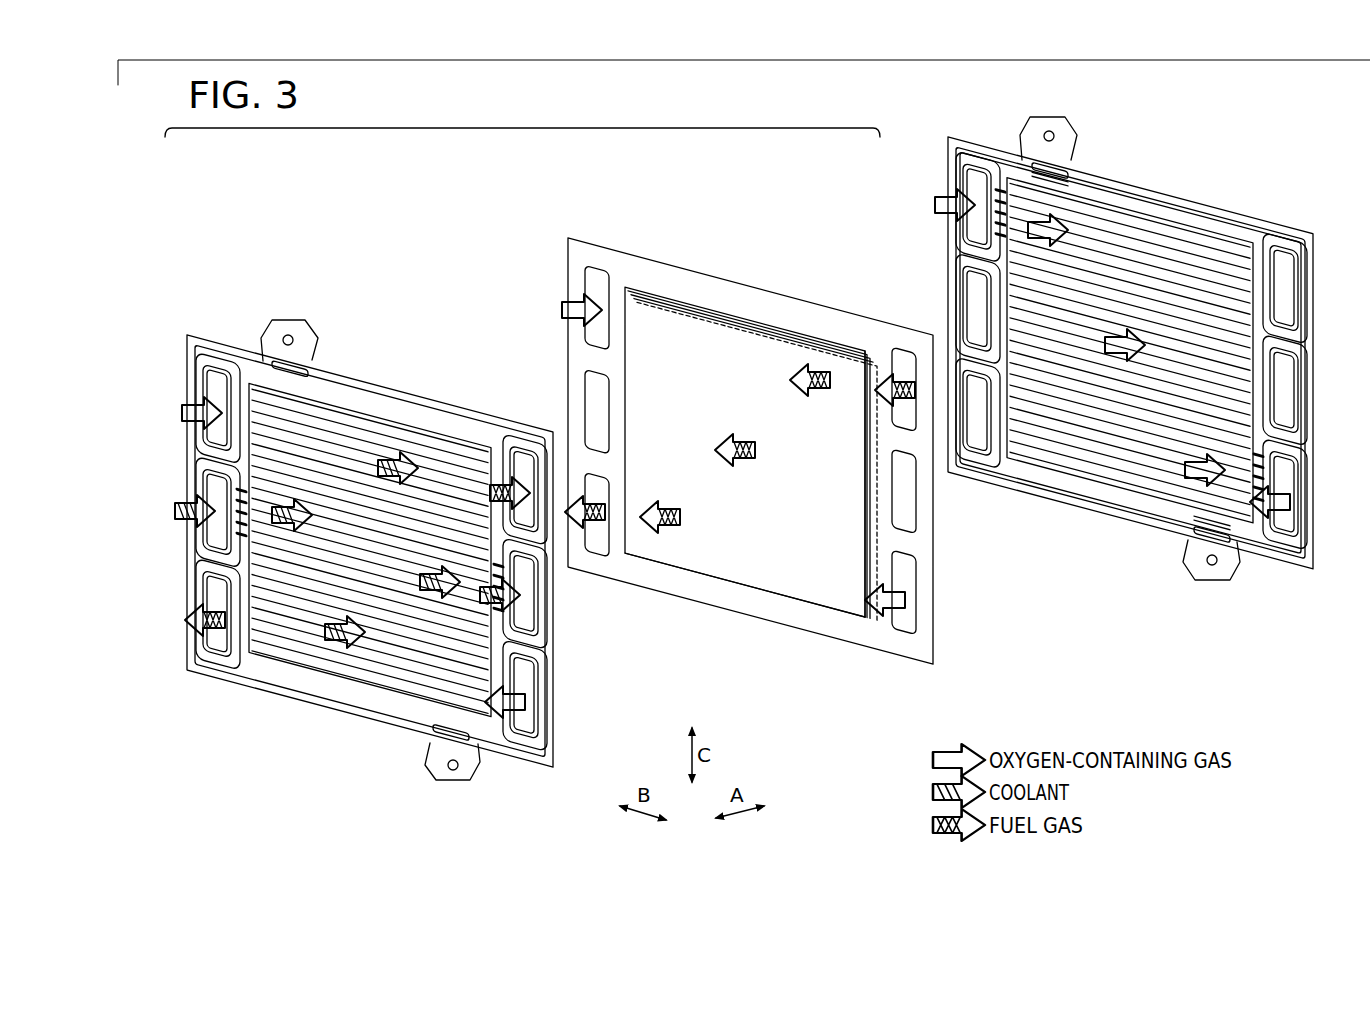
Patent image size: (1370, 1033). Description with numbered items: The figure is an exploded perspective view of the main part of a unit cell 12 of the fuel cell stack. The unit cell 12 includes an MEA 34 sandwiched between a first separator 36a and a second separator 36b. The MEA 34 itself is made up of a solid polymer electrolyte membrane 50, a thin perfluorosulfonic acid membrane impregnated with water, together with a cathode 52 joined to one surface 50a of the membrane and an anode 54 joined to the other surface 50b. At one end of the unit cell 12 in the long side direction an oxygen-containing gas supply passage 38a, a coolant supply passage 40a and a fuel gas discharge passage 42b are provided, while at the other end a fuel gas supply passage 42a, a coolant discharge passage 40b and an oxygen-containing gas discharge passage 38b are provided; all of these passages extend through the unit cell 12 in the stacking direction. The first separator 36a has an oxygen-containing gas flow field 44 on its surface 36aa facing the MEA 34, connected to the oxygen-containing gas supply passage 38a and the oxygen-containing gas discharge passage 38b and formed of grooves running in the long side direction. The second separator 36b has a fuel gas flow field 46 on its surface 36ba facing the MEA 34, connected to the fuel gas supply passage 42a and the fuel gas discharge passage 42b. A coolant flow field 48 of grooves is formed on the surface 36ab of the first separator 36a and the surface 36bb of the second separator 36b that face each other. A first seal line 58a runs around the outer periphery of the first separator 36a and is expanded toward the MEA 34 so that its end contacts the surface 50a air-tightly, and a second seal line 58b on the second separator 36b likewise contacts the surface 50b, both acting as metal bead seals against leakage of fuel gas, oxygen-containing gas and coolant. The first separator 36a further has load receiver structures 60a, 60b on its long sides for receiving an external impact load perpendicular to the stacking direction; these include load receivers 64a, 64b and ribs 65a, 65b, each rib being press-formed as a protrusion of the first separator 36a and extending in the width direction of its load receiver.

The unit cell 12 is at (522, 128).
The MEA 34 is at (568, 238).
The first separator 36a is at (942, 136).
The second separator 36b is at (187, 335).
The surface of the first separator facing the MEA 36aa is at (1292, 430).
The surface of the first separator 36ab is at (1300, 458).
The surface of the second separator facing the MEA 36ba is at (535, 652).
The surface of the second separator 36bb is at (540, 632).
The oxygen-containing gas supply passage 38a is at (215, 386).
The oxygen-containing gas discharge passage 38b is at (526, 722).
The coolant supply passage 40a is at (215, 492).
The coolant discharge passage 40b is at (526, 612).
The fuel gas supply passage 42a is at (522, 462).
The fuel gas discharge passage 42b is at (215, 596).
The oxygen-containing gas flow field 44 is at (1170, 230).
The fuel gas flow field 46 is at (403, 445).
The coolant flow field 48 is at (303, 660).
The solid polymer electrolyte membrane 50 is at (715, 290).
The surface of the solid polymer electrolyte membrane 50a is at (886, 640).
The surface of the solid polymer electrolyte membrane 50b is at (860, 632).
The cathode 52 is at (770, 318).
The anode 54 is at (665, 312).
The first seal line 58a is at (1228, 226).
The second seal line 58b is at (450, 420).
The load receiver structure 60a is at (302, 335).
The load receiver structure 60b is at (462, 782).
The load receiver 64a is at (726, 231).
The load receiver 64b is at (834, 683).
The rib 65a is at (284, 366).
The rib 65b is at (441, 738).